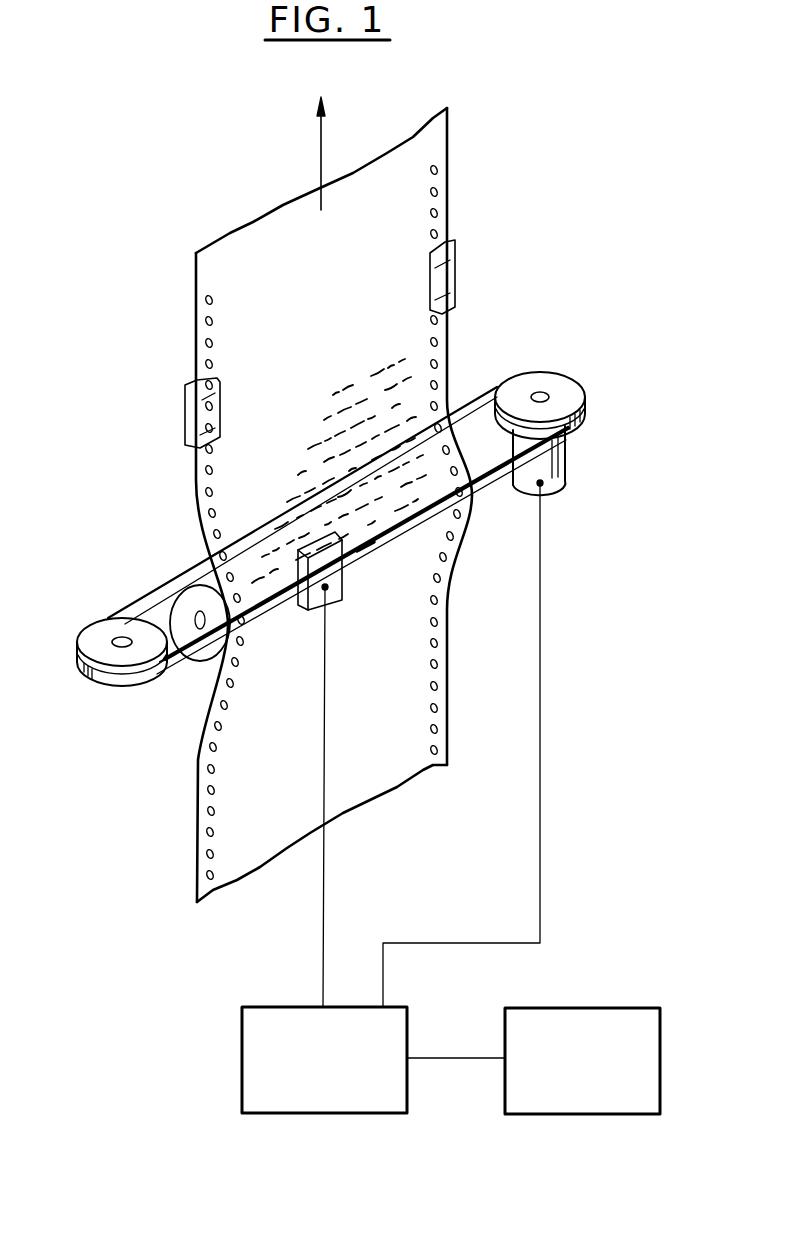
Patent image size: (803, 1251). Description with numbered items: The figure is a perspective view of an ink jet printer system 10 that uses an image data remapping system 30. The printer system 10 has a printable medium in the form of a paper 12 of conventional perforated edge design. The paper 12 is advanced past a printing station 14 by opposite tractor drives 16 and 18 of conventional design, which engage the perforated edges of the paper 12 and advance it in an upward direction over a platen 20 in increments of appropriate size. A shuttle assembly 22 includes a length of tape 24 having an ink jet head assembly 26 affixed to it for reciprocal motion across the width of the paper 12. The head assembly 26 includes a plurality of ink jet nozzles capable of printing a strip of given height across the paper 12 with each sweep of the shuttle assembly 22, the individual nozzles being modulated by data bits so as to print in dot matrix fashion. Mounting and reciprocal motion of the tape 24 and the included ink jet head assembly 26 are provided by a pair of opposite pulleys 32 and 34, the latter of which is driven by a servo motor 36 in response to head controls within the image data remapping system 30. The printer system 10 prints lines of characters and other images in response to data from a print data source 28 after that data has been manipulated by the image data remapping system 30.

The printer system 10 is at (157, 786).
The paper 12 is at (197, 855).
The printing station 14 is at (388, 546).
The tractor drive 16 is at (192, 422).
The tractor drive 18 is at (448, 275).
The platen 20 is at (183, 598).
The shuttle assembly 22 is at (264, 624).
The tape 24 is at (175, 658).
The ink jet head assembly 26 is at (337, 586).
The print data source 28 is at (580, 1102).
The image data remapping system 30 is at (316, 1102).
The pulley 32 is at (88, 635).
The pulley 34 is at (572, 392).
The servo motor 36 is at (563, 483).